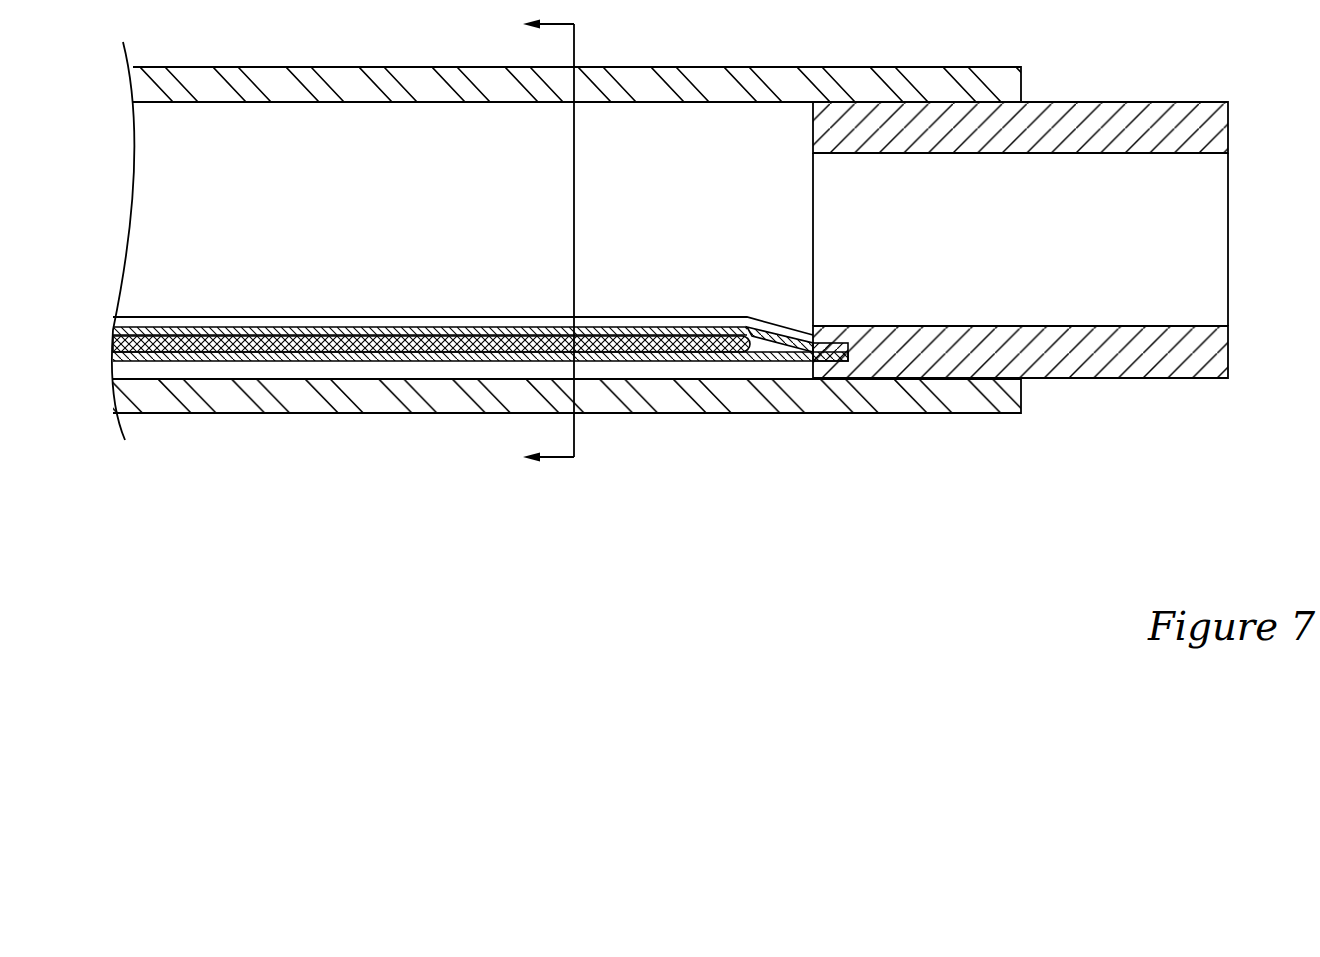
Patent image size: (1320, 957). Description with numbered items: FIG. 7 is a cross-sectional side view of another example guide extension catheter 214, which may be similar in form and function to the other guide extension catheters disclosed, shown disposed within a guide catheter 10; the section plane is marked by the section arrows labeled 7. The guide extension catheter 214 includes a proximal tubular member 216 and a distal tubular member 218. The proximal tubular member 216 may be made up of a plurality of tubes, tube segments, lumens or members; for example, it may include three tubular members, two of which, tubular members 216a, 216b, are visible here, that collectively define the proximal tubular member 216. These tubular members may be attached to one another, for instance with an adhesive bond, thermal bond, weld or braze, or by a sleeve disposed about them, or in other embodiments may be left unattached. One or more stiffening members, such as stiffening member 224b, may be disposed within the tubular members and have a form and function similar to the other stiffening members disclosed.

The section line indicator 7 is at (540, 240).
The guide catheter 10 is at (713, 83).
The guide extension catheter 214 is at (481, 224).
The proximal tubular member 216 is at (480, 360).
The tubular member 216a is at (343, 317).
The tubular member 216b is at (237, 327).
The distal tubular member 218 is at (1058, 108).
The stiffening member 224b is at (285, 345).